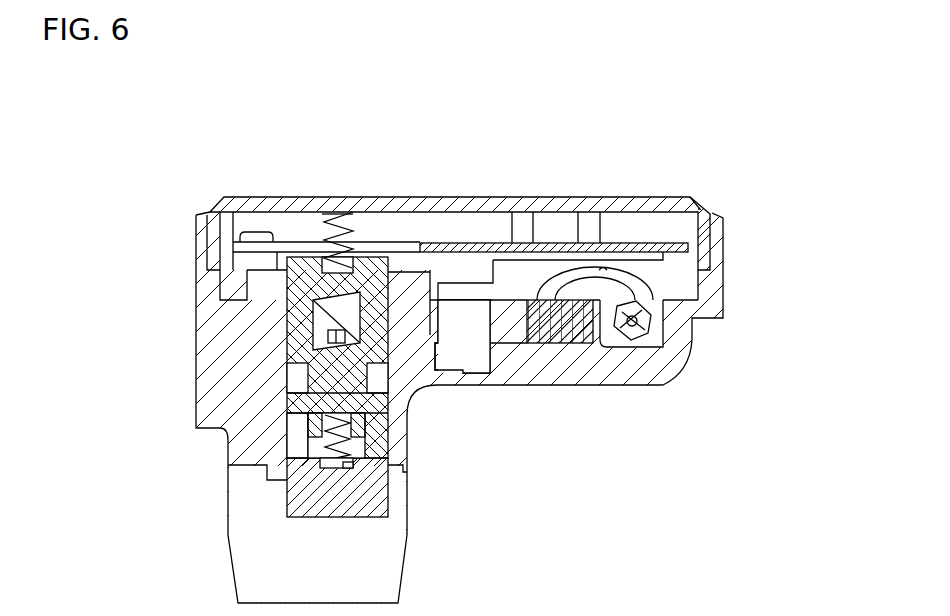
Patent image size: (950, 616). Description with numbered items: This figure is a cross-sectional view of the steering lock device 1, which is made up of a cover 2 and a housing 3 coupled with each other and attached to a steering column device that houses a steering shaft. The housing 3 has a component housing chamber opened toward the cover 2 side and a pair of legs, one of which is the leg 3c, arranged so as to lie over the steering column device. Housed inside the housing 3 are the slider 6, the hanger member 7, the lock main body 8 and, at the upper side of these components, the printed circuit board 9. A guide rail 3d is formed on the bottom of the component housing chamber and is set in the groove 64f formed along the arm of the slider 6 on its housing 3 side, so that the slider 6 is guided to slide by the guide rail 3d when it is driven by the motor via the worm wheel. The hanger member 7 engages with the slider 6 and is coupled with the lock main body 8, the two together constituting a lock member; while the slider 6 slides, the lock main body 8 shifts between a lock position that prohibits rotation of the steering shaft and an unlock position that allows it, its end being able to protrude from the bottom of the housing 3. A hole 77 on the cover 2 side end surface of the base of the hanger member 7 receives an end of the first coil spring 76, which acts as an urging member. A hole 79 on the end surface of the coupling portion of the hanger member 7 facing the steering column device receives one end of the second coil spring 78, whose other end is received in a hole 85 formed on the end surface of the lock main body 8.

The steering lock device 1 is at (174, 150).
The cover 2 is at (622, 197).
The housing 3 is at (732, 284).
The leg 3c is at (248, 569).
The guide rail 3d is at (333, 336).
The slider 6 is at (328, 320).
The hanger member 7 is at (300, 350).
The lock main body 8 is at (374, 503).
The printed circuit board 9 is at (548, 243).
The groove 64f is at (427, 384).
The first coil spring 76 is at (357, 212).
The hole 77 is at (322, 215).
The second coil spring 78 is at (346, 455).
The hole 79 is at (338, 432).
The hole 85 is at (349, 468).